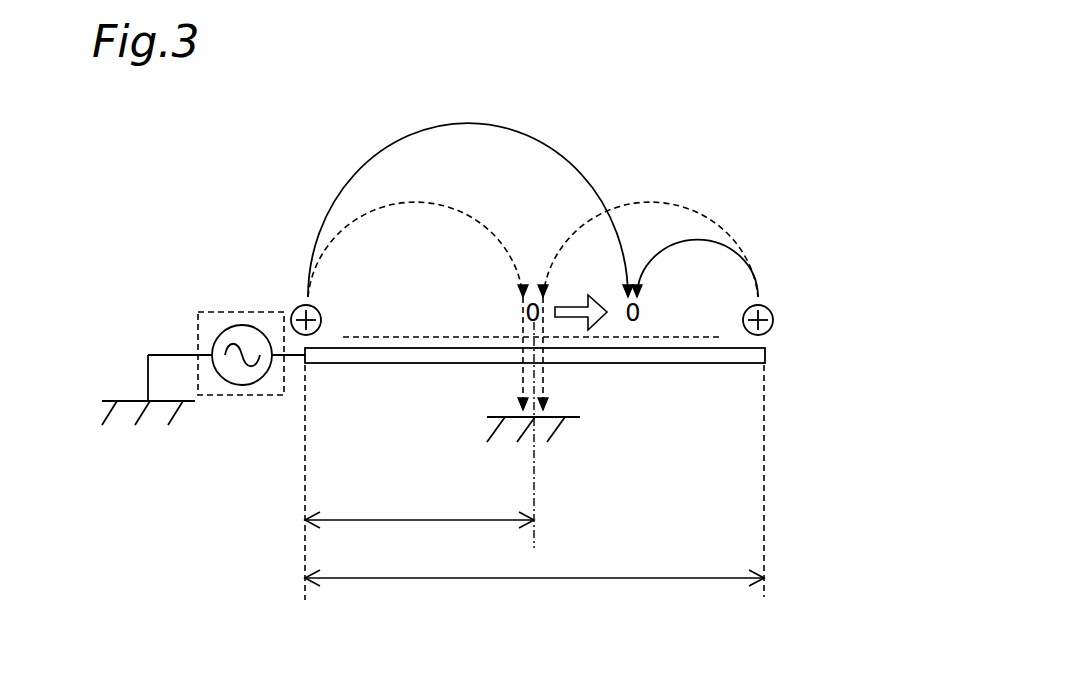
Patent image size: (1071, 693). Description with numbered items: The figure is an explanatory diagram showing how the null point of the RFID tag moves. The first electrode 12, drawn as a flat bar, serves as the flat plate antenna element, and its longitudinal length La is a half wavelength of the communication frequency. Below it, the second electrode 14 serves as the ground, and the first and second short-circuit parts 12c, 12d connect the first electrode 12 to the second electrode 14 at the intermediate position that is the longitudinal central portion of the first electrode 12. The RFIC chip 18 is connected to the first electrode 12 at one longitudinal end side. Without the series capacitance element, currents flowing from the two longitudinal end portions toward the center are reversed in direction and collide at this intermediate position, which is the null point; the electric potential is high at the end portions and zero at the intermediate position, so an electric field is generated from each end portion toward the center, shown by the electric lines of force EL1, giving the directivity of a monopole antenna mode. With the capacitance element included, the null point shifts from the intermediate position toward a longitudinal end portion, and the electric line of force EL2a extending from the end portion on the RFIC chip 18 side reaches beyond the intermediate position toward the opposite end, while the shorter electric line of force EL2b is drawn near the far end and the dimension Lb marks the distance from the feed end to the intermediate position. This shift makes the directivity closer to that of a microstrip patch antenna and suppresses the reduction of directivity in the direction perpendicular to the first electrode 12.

The first electrode 12 is at (768, 351).
The first short-circuit part 12c is at (523, 388).
The second short-circuit part 12d is at (543, 347).
The second electrode 14 is at (110, 400).
The RFIC chip 18 is at (227, 311).
The electric line of force EL1 is at (453, 197).
The electric line of force EL2a is at (470, 122).
The electric field line EL2b is at (737, 248).
The length Lb is at (419, 508).
The longitudinal length La is at (534, 589).